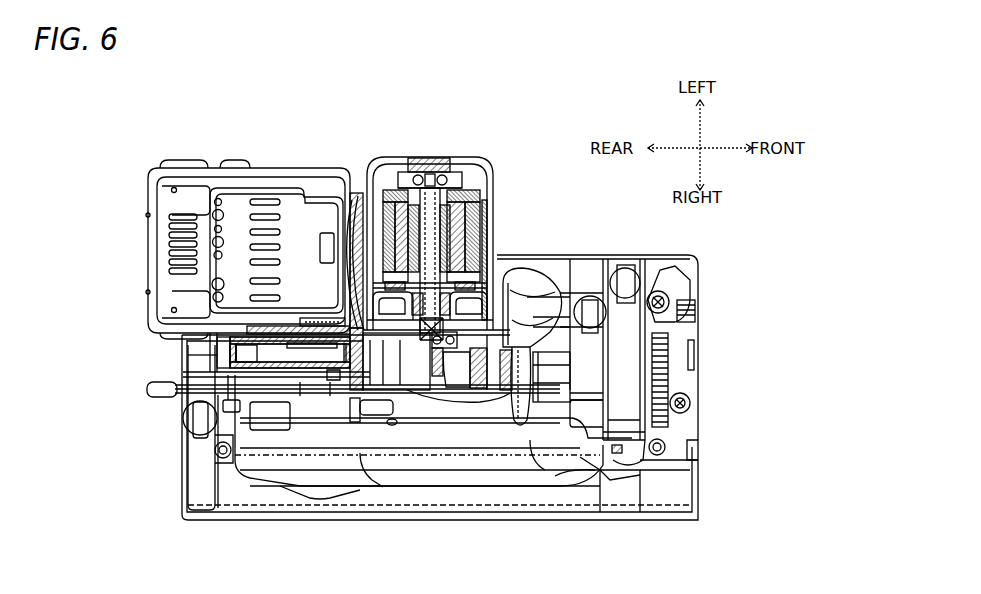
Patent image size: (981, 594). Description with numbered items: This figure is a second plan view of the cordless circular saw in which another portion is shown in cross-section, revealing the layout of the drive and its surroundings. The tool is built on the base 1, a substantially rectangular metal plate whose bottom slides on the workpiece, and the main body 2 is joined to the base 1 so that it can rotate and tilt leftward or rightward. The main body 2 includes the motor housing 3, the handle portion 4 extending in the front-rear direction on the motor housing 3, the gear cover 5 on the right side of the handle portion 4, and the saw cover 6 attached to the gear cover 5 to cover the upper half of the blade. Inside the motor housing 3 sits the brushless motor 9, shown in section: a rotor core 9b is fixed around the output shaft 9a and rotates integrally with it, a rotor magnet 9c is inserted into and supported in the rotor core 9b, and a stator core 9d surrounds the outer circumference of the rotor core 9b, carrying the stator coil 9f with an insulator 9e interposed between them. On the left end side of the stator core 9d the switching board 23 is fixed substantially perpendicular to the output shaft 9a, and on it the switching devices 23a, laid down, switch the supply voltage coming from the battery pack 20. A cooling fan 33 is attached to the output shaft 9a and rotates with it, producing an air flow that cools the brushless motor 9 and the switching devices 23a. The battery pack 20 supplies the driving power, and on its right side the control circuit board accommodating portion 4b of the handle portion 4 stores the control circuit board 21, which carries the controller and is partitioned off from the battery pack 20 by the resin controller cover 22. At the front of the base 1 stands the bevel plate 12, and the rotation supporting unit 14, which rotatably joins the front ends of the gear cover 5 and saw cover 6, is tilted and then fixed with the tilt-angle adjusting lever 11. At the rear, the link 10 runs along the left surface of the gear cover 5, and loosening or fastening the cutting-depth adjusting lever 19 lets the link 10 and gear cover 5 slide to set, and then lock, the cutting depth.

The base 1 is at (696, 516).
The main body 2 is at (419, 155).
The motor housing 3 is at (357, 215).
The handle portion 4 is at (560, 297).
The control circuit board accommodating portion 4b is at (220, 356).
The gear cover 5 is at (518, 395).
The saw cover 6 is at (445, 473).
The brushless motor 9 is at (490, 222).
The output shaft 9a is at (447, 160).
The rotor core 9b is at (466, 156).
The rotor magnet 9c is at (488, 200).
The stator core 9d is at (490, 238).
The insulator 9e is at (530, 262).
The stator coil 9f is at (565, 293).
The link 10 is at (232, 415).
The tilt-angle adjusting lever 11 is at (693, 327).
The bevel plate 12 is at (670, 385).
The rotation supporting unit 14 is at (638, 462).
The cutting-depth adjusting lever 19 is at (150, 385).
The battery pack 20 is at (145, 197).
The control circuit board 21 is at (280, 352).
The controller cover 22 is at (303, 333).
The switching board 23 is at (382, 192).
The switching devices 23a is at (398, 192).
The cooling fan 33 is at (392, 302).